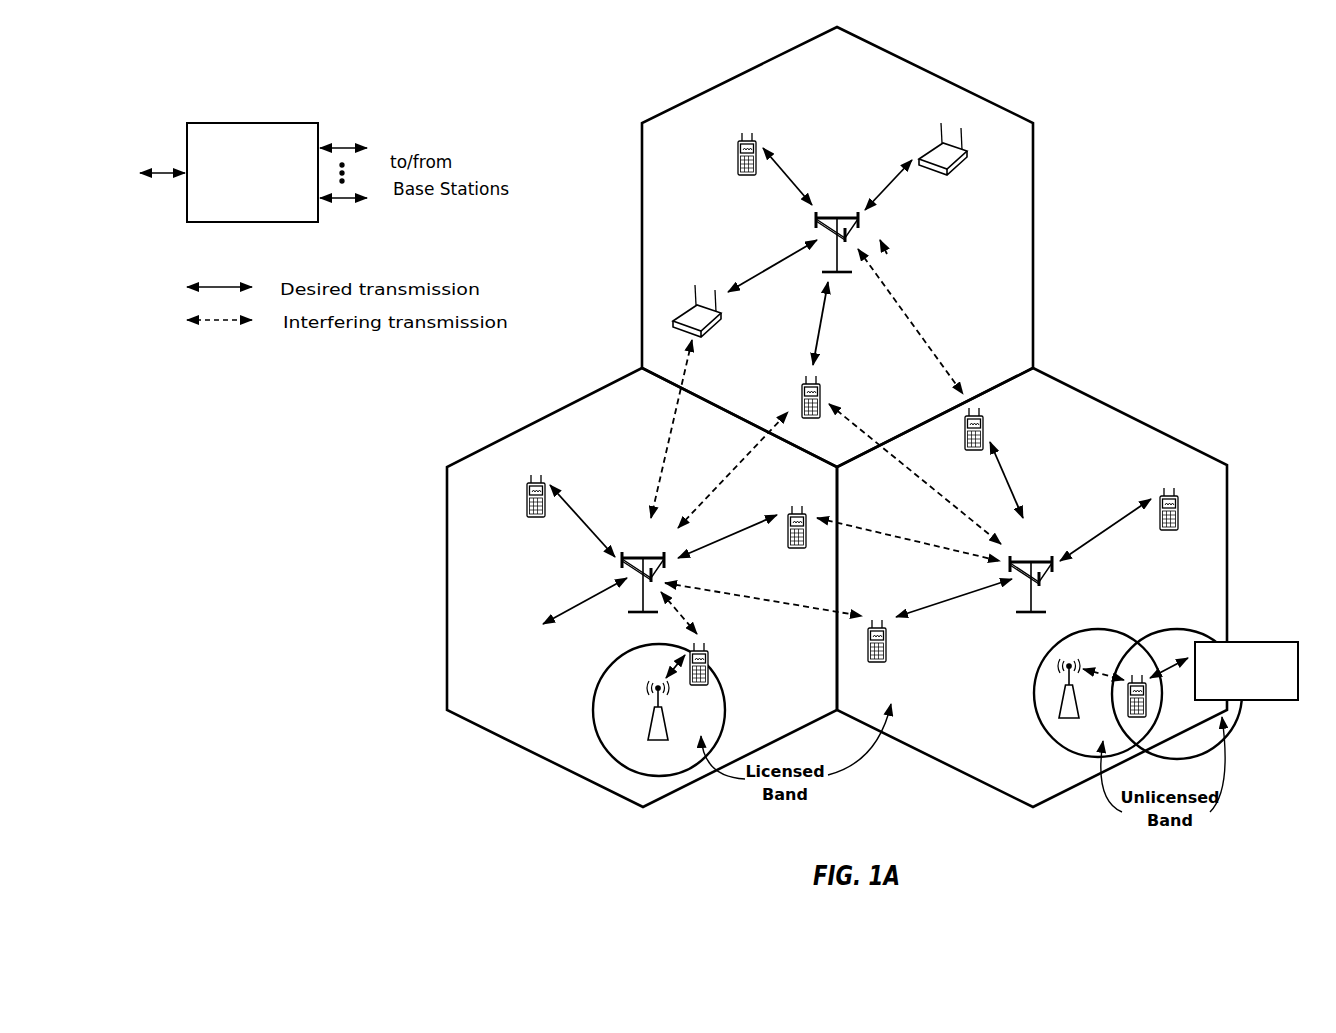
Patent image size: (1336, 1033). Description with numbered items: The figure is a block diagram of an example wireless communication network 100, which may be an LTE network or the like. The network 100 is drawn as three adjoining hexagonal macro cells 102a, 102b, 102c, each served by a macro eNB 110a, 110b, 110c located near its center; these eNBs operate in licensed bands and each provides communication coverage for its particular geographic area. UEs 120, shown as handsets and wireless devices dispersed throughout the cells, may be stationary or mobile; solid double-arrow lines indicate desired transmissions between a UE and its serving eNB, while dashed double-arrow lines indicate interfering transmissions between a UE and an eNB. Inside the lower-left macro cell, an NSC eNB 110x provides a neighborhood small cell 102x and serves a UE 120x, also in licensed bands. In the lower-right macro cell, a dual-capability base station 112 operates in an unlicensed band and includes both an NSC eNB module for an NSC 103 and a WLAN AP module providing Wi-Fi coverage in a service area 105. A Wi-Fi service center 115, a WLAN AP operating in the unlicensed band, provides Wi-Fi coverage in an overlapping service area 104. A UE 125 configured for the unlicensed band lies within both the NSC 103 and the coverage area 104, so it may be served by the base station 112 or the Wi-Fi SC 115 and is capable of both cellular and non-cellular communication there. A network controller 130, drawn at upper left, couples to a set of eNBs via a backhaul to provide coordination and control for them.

The wireless communication network 100 is at (1163, 103).
The macro cell 102a is at (947, 63).
The macro cell 102b is at (558, 416).
The macro cell 102c is at (1129, 416).
The NSC 102x is at (614, 656).
The NSC 103 is at (1062, 693).
The service area 104 is at (1178, 629).
The service area 105 is at (1041, 659).
The eNB 110a is at (836, 216).
The eNB 110b is at (650, 547).
The eNB 110c is at (1031, 562).
The NSC eNB 110x is at (666, 726).
The base station 112 is at (1079, 706).
The Wi-Fi service center 115 is at (1299, 701).
The UE 120 is at (740, 153).
The UE 120x is at (710, 656).
The UE 125 is at (1121, 705).
The network controller 130 is at (250, 123).